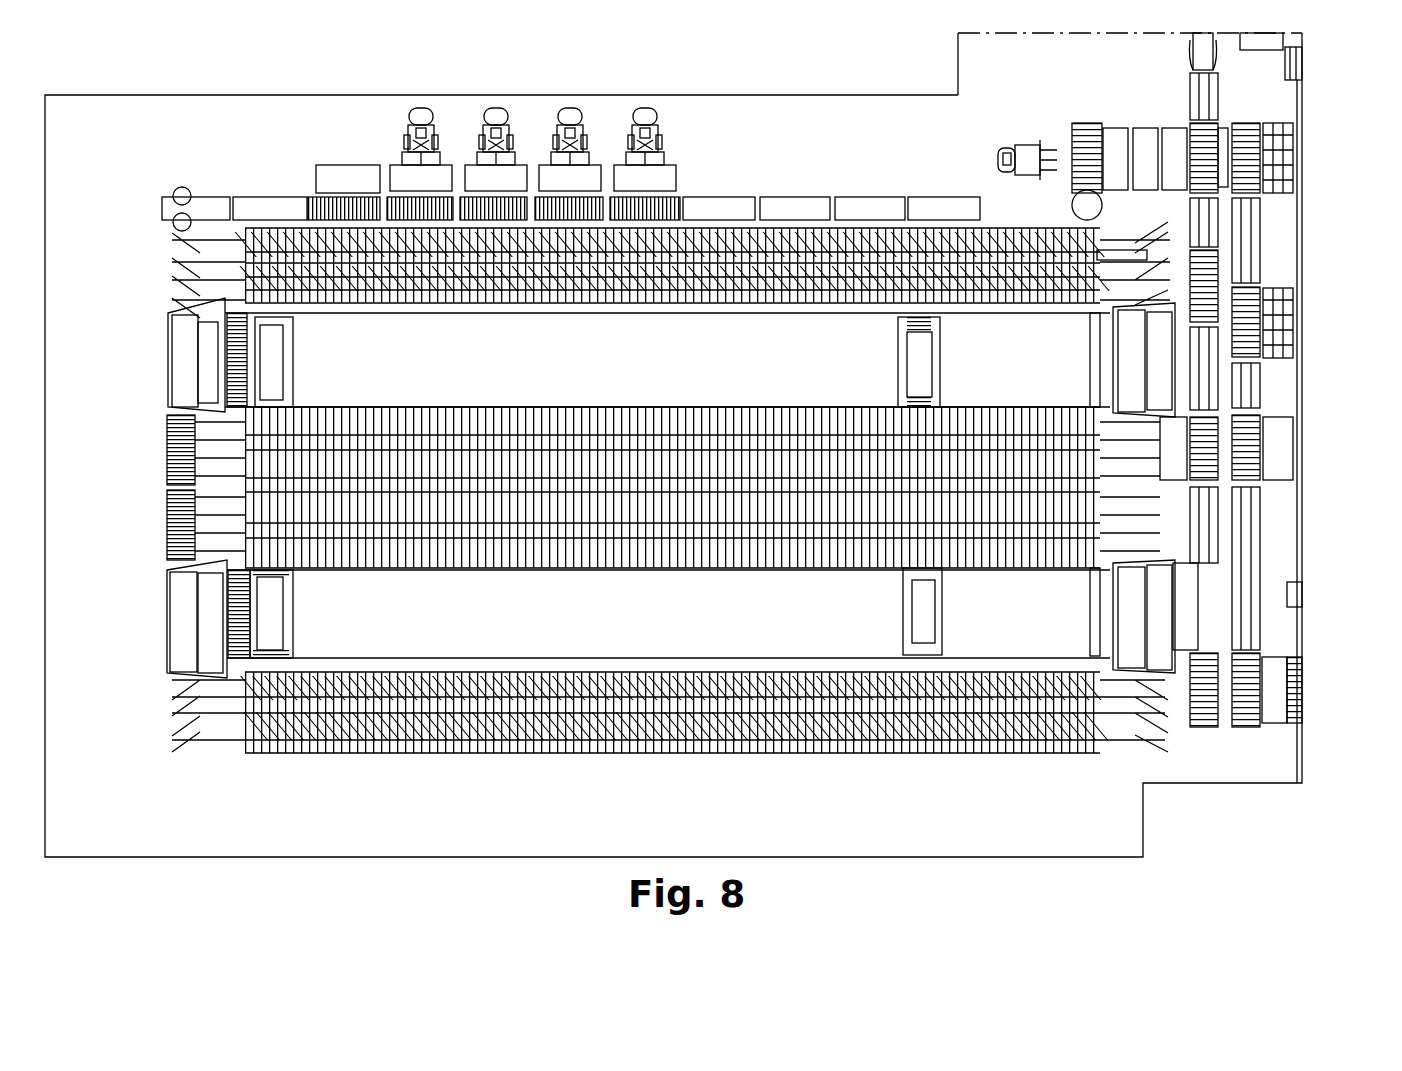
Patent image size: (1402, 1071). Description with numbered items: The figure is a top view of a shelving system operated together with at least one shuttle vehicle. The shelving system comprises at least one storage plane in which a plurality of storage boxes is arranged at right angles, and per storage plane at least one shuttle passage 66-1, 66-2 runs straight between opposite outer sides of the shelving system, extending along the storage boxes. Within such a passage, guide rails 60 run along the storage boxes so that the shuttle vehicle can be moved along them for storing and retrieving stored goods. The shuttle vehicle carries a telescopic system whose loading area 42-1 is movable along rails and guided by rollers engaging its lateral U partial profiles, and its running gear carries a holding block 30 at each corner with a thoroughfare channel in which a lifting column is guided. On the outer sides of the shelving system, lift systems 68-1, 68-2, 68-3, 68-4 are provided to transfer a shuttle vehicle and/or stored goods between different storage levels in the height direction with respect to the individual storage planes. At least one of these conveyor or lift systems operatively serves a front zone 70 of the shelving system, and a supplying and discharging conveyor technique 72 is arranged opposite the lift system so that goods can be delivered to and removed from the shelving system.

The holding block 30 is at (316, 180).
The guide rail 60 is at (830, 153).
The shuttle passage 66-1 is at (262, 628).
The shuttle passage 66-2 is at (920, 330).
The lift system 68-1 is at (168, 355).
The lift system 68-2 is at (1178, 372).
The lift system 68-3 is at (168, 598).
The lift system 68-4 is at (1140, 668).
The front zone 70 is at (1296, 552).
The supplying and discharging conveyor technique 72 is at (1145, 125).
The loading area 42-1 is at (680, 642).